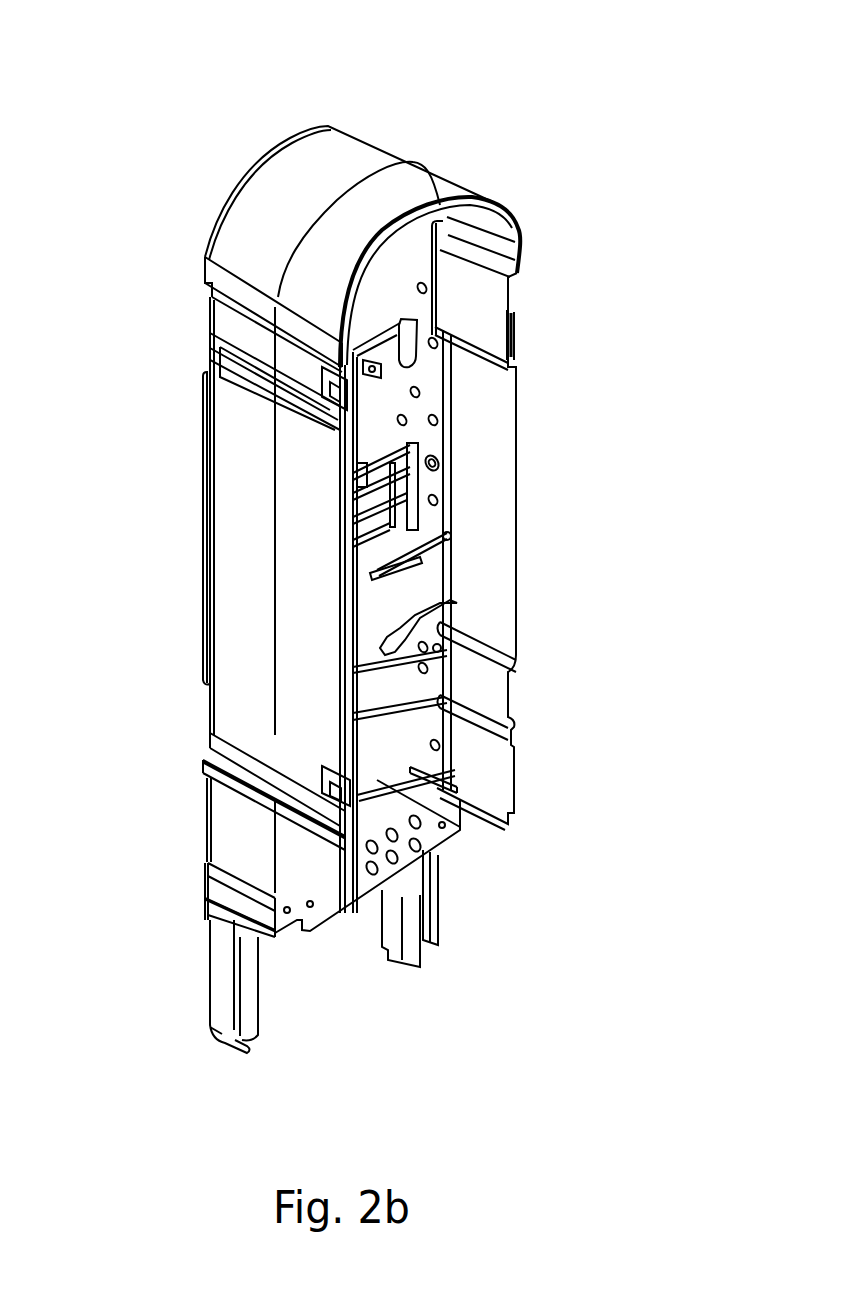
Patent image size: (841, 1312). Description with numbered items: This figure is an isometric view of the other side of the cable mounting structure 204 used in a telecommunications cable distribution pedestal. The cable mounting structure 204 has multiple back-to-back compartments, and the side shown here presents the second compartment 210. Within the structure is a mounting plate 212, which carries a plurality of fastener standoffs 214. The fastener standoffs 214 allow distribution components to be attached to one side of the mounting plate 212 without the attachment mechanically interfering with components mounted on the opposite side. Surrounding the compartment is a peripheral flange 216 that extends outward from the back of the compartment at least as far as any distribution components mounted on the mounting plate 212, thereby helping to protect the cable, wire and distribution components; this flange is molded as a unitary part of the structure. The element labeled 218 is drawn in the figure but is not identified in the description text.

The cable mounting structure 204 is at (527, 69).
The second compartment 210 is at (403, 267).
The mounting plate 212 is at (423, 407).
The fastener standoffs 214 is at (463, 718).
The peripheral flange 216 is at (297, 580).
The side flange lip 218 is at (437, 328).